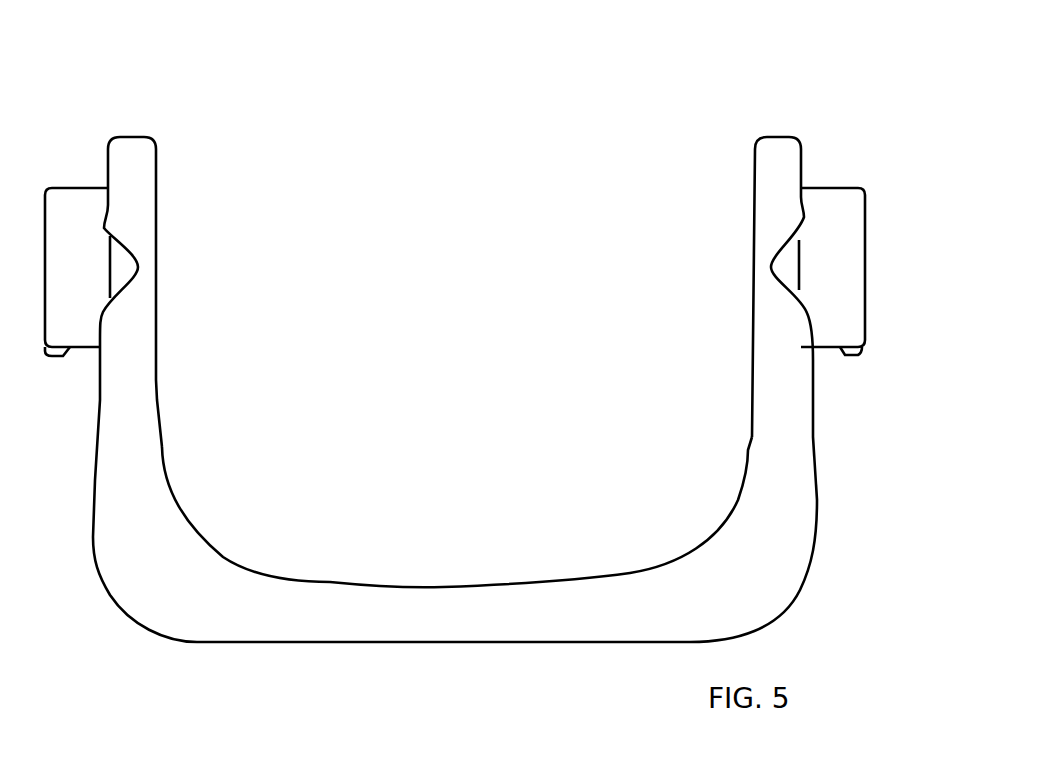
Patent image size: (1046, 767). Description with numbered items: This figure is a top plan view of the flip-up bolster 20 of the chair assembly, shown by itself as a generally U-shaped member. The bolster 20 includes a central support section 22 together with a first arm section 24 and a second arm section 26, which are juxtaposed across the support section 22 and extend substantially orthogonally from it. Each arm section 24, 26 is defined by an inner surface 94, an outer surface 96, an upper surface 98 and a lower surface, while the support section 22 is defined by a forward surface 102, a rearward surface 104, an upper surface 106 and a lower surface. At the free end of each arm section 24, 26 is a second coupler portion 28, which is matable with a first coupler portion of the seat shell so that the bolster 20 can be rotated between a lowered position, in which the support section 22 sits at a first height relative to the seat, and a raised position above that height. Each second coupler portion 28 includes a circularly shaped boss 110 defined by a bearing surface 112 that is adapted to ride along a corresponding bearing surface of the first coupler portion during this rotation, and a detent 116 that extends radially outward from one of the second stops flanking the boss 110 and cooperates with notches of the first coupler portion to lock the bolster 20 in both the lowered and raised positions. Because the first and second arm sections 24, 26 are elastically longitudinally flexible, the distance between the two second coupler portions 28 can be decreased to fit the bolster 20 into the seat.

The bolster 20 is at (717, 110).
The support section 22 is at (453, 646).
The first arm section 24 is at (159, 319).
The second arm section 26 is at (751, 347).
The second coupler portion 28 is at (868, 211).
The inner surface 94 is at (752, 408).
The outer surface 96 is at (817, 528).
The upper surface 98 is at (790, 448).
The forward surface 102 is at (299, 644).
The rearward surface 104 is at (440, 582).
The upper surface 106 is at (543, 620).
The boss 110 is at (867, 247).
The bearing surface 112 is at (843, 277).
The detent 116 is at (857, 354).